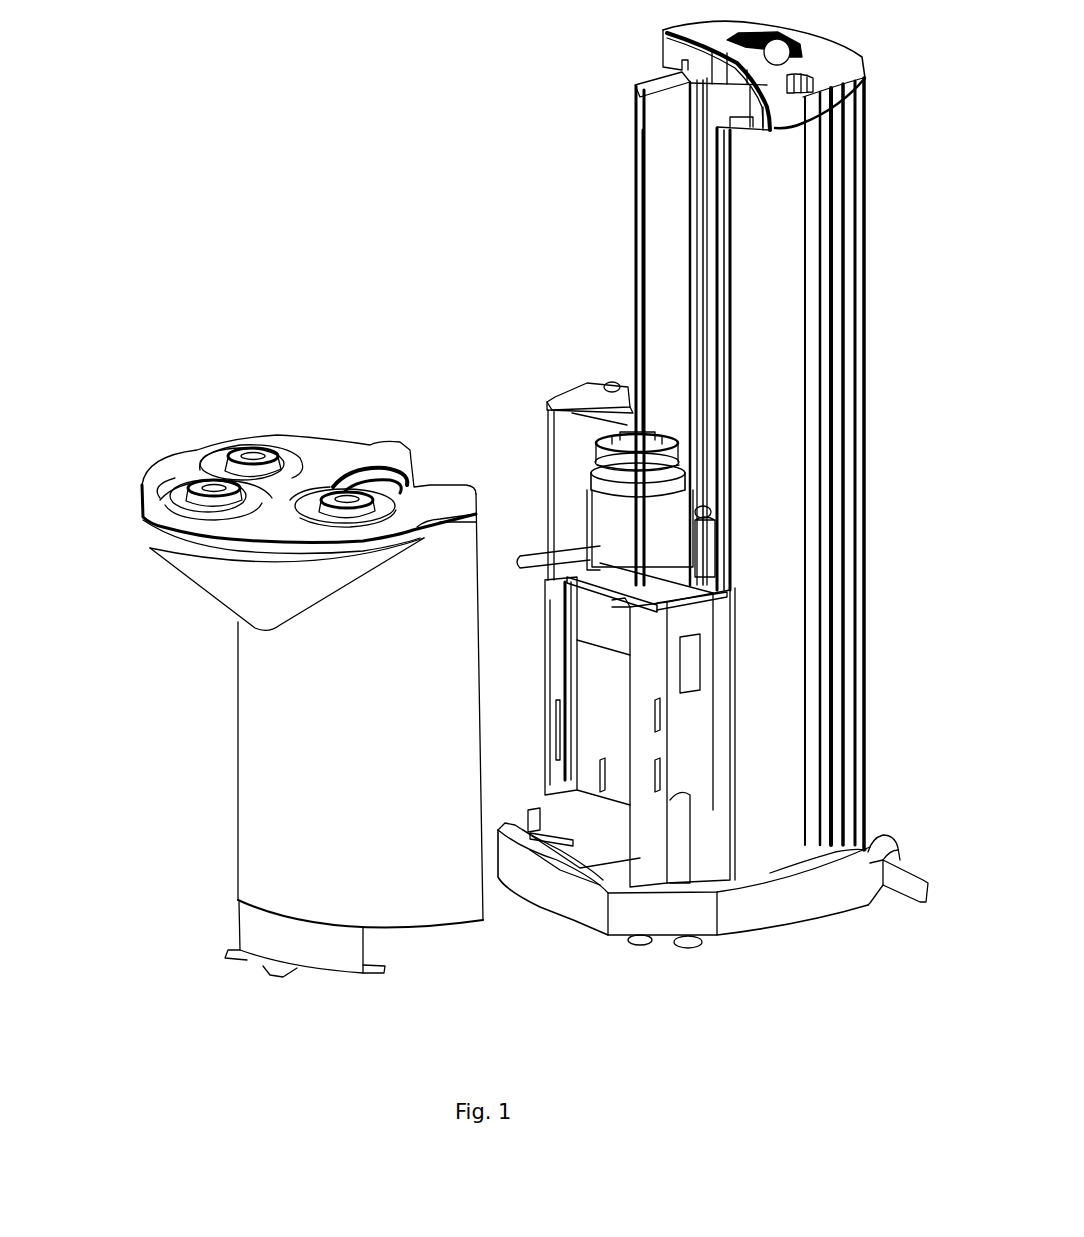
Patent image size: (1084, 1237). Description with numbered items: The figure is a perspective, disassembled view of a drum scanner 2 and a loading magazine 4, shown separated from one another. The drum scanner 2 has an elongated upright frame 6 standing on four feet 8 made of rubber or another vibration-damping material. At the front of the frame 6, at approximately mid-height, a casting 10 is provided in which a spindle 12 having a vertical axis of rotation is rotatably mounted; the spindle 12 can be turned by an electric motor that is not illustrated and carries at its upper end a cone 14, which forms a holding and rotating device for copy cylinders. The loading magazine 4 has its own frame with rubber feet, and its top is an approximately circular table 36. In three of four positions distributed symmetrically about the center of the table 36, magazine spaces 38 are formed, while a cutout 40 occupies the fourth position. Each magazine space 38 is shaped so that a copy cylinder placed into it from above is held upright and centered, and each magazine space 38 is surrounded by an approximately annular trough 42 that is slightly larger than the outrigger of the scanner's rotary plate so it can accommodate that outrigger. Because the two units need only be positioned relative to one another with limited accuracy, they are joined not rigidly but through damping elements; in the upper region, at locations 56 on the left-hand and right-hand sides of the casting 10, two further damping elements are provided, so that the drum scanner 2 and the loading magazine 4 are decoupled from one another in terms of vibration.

The drum scanner 2 is at (510, 165).
The loading magazine 4 is at (138, 392).
The frame 6 is at (840, 455).
The feet 8 is at (677, 943).
The casting 10 is at (655, 510).
The spindle 12 is at (593, 452).
The cone 14 is at (583, 398).
The table 36 is at (322, 450).
The magazine spaces 38 is at (247, 450).
The cutout 40 is at (393, 488).
The annular trough 42 is at (262, 503).
The locations 56 is at (193, 500).